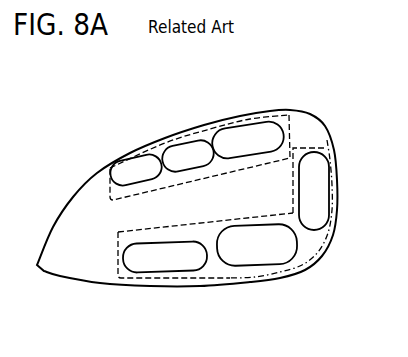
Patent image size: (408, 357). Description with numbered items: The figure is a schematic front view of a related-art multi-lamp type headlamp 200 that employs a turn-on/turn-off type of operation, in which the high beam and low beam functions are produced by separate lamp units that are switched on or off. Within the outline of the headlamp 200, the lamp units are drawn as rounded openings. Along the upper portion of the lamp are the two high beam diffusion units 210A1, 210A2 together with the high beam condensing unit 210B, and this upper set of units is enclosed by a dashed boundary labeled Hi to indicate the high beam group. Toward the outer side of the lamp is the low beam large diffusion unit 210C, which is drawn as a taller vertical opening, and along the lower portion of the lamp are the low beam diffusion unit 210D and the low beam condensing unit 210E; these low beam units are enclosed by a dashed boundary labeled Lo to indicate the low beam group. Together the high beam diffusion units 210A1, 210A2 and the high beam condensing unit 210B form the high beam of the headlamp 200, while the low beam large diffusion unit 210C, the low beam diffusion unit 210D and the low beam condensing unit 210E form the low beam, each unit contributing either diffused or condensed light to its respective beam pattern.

The multi-lamp type headlamp 200 is at (50, 76).
The high beam diffusion unit 210A1 is at (140, 172).
The high beam diffusion unit 210A2 is at (190, 160).
The high beam condensing unit 210B is at (246, 133).
The low beam large diffusion unit 210C is at (311, 223).
The low beam diffusion unit 210D is at (160, 263).
The low beam condensing unit 210E is at (252, 253).
The high-beam region Hi is at (108, 198).
The low-beam region Lo is at (310, 148).